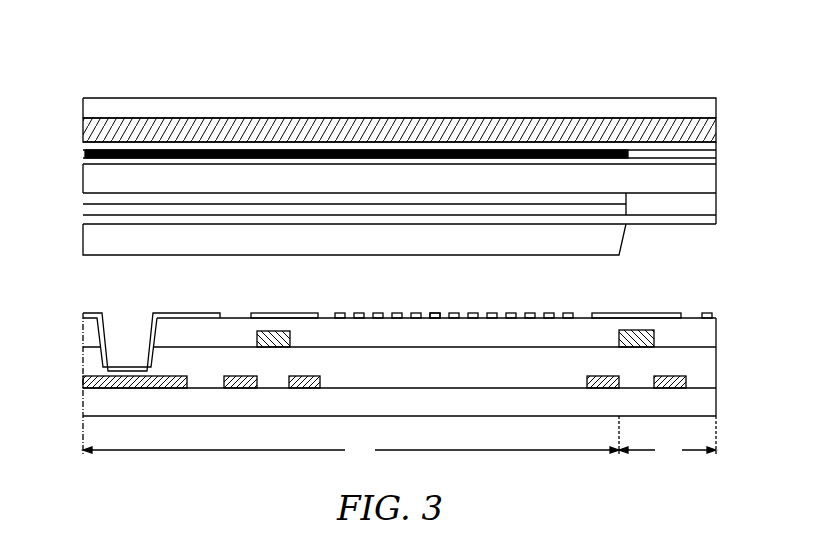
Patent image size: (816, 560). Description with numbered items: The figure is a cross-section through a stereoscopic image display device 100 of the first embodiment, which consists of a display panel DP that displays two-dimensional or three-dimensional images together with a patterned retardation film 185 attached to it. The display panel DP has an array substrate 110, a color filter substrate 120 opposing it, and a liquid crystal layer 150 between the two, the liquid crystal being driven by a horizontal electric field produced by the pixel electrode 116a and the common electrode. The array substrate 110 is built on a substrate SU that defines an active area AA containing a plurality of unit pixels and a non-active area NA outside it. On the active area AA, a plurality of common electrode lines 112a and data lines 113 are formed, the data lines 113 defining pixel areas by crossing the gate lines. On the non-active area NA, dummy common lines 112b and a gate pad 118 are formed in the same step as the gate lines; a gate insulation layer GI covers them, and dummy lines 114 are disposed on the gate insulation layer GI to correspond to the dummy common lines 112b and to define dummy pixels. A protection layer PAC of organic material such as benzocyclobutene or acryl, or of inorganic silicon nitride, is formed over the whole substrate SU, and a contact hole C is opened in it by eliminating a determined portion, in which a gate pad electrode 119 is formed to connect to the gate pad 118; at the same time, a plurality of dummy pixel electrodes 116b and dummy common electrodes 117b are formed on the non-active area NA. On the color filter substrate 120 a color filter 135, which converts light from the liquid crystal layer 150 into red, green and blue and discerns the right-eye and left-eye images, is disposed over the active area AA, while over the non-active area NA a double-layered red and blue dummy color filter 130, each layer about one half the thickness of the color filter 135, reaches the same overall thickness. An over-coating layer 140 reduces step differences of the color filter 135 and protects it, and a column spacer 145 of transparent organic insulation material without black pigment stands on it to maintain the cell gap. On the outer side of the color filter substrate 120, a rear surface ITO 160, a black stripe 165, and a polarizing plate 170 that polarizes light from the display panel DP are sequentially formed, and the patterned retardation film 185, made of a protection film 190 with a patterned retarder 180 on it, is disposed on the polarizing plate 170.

The stereoscopic image display device 100 is at (420, 31).
The array substrate 110 is at (395, 343).
The common electrode lines 112a is at (607, 390).
The dummy common lines 112b is at (246, 390).
The data lines 113 is at (631, 330).
The dummy lines 114 is at (272, 330).
The pixel electrode 116a is at (705, 312).
The dummy pixel electrodes 116b is at (417, 312).
The dummy common electrodes 117b is at (436, 313).
The gate pad 118 is at (130, 390).
The gate pad electrode 119 is at (183, 313).
The color filter substrate 120 is at (706, 177).
The dummy color filter 130 is at (83, 214).
The color filter 135 is at (706, 202).
The over-coating layer 140 is at (706, 220).
The column spacer 145 is at (326, 241).
The liquid crystal layer 150 is at (693, 272).
The rear surface ITO 160 is at (81, 163).
The black stripe 165 is at (85, 155).
The polarizing plate 170 is at (706, 148).
The patterned retarder 180 is at (558, 127).
The patterned retardation film 185 is at (673, 45).
The protection film 190 is at (668, 104).
The contact hole C is at (133, 338).
The protection layer PAC is at (706, 330).
The gate insulation layer GI is at (706, 358).
The substrate SU is at (706, 405).
The display panel DP is at (763, 400).
The non-active area NA is at (351, 450).
The active area AA is at (667, 450).